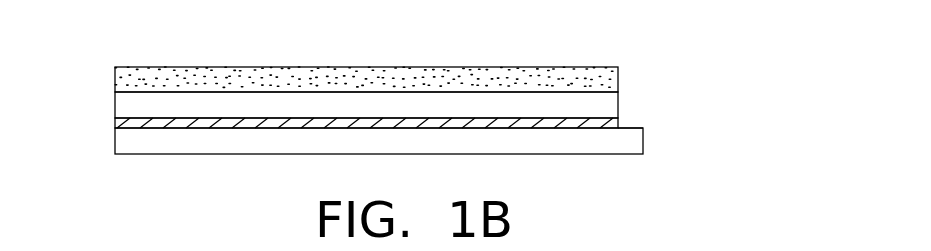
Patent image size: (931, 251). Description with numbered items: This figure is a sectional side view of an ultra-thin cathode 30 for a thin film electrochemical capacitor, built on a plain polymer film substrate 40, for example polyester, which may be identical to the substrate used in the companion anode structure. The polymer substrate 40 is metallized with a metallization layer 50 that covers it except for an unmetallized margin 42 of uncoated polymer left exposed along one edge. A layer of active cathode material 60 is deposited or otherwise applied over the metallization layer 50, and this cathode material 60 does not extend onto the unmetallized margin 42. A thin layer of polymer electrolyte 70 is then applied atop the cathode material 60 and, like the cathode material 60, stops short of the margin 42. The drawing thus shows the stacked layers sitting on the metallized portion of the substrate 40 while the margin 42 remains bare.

The cathode 30 is at (377, 98).
The plain polymer film substrate 40 is at (530, 143).
The unmetallized margin 42 is at (630, 127).
The metallization layer 50 is at (118, 125).
The active cathode material 60 is at (608, 105).
The polymer electrolyte 70 is at (130, 80).